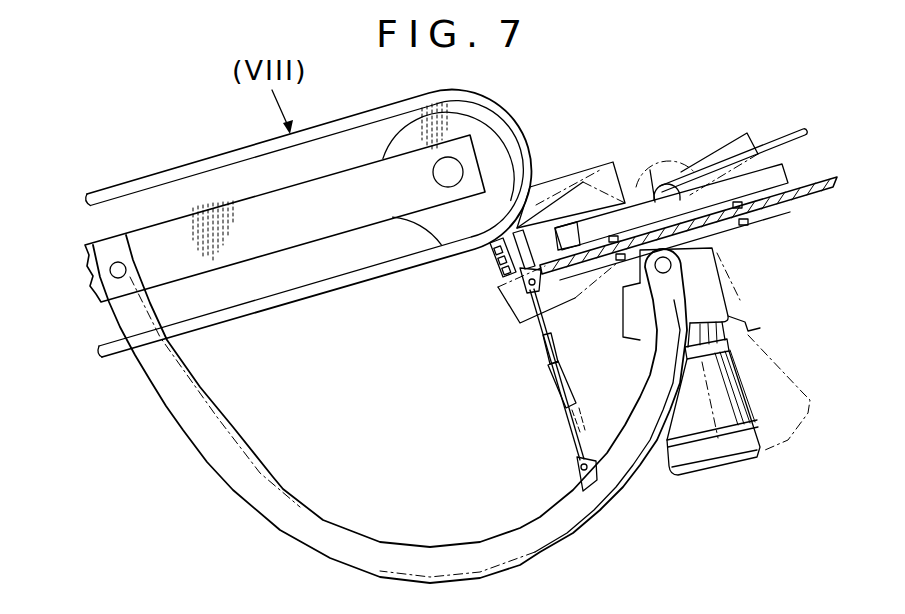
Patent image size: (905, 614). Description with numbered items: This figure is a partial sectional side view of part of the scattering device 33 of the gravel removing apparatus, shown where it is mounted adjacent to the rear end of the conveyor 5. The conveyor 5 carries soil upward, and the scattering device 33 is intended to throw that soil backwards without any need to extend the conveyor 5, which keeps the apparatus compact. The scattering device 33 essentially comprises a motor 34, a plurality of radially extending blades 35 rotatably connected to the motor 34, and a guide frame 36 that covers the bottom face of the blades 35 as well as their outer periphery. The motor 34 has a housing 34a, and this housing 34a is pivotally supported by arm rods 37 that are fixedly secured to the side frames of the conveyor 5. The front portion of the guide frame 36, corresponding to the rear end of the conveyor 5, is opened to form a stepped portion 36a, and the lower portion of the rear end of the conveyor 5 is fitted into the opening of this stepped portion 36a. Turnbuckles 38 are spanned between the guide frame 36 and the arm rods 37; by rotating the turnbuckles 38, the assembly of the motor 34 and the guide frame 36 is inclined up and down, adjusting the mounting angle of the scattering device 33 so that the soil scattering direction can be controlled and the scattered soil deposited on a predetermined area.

The conveyor 5 is at (322, 291).
The scattering device 33 is at (668, 158).
The motor 34 is at (709, 472).
The housing 34a is at (760, 328).
The blades 35 is at (607, 220).
The guide frame 36 is at (498, 288).
The stepped portion 36a is at (490, 270).
The arm rods 37 is at (323, 519).
The turnbuckles 38 is at (556, 391).